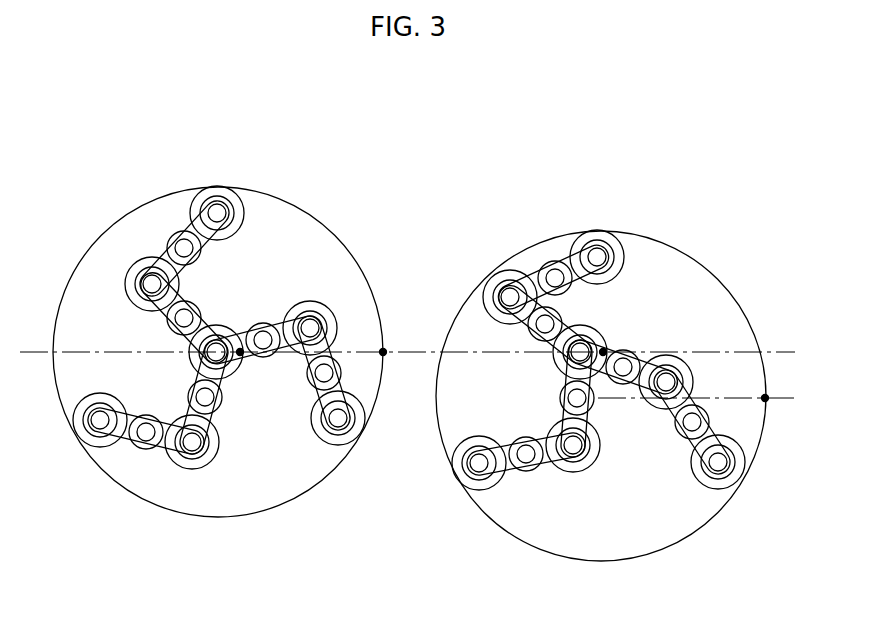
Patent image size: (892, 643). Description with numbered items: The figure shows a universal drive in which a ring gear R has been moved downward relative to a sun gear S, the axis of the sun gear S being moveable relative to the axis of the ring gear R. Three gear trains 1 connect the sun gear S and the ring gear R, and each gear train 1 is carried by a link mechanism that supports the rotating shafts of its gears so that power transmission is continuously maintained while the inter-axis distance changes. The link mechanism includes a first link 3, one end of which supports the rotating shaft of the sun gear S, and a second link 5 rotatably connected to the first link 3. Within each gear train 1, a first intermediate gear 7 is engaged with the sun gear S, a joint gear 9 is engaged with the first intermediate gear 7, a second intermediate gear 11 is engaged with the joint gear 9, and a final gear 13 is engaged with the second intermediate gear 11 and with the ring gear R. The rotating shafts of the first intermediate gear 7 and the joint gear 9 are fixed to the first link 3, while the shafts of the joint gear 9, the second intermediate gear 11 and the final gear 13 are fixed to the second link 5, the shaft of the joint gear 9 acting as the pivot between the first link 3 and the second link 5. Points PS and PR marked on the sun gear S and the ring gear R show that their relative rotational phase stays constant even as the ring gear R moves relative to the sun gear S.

The gear train 1 is at (154, 462).
The first link 3 is at (155, 309).
The second link 5 is at (192, 213).
The first intermediate gear 7 is at (201, 306).
The joint gear 9 is at (128, 279).
The second intermediate gear 11 is at (169, 240).
The final gear 13 is at (214, 186).
The ring gear R is at (275, 190).
The sun gear S is at (236, 362).
The point PS is at (243, 354).
The point PR is at (383, 352).